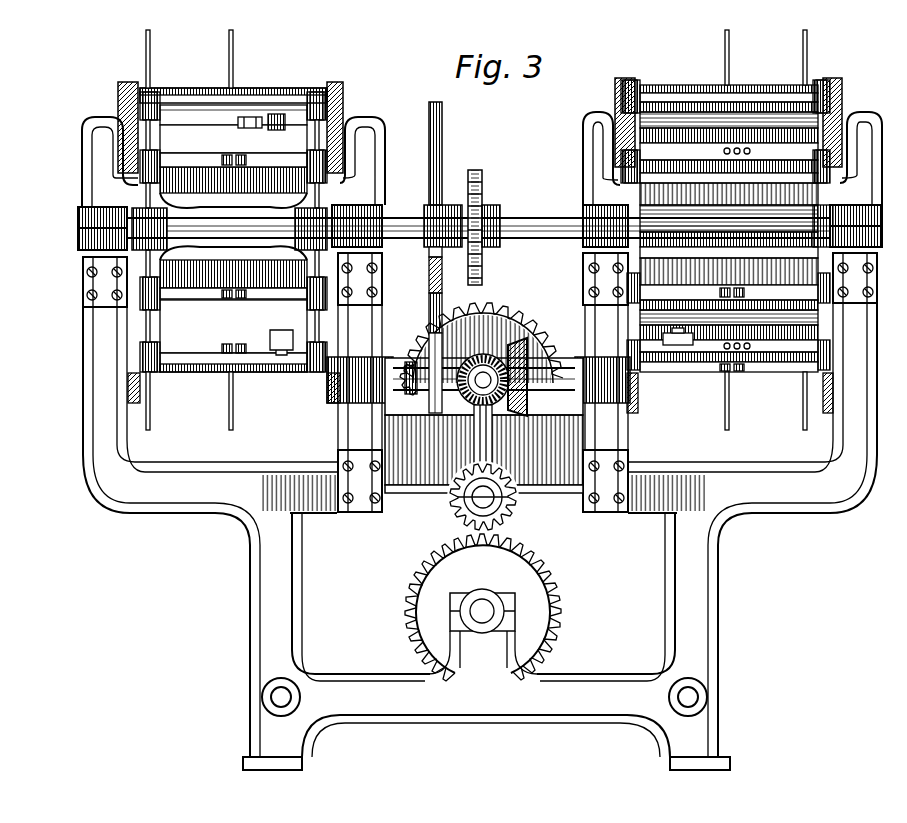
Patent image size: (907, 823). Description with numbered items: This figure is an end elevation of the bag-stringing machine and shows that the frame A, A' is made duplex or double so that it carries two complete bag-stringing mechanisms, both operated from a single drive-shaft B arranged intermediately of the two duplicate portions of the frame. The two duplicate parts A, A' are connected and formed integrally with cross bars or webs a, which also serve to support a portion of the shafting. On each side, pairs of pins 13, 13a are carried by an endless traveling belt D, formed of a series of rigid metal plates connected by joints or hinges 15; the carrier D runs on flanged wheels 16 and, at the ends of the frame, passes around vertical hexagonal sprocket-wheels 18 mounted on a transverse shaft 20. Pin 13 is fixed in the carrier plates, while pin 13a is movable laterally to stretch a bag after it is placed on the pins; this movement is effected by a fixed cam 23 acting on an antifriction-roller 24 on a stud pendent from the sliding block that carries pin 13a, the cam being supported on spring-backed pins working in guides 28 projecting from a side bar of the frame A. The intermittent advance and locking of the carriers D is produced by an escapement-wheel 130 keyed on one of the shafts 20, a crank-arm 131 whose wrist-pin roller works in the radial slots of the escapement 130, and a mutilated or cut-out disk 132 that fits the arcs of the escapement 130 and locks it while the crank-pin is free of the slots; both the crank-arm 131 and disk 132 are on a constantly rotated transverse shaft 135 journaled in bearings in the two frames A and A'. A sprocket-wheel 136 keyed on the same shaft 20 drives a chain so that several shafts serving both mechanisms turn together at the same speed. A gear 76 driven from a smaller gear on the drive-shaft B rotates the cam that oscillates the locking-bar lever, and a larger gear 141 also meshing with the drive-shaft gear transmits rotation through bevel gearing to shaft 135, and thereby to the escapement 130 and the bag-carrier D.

The fixed pin 13 is at (467, 230).
The movable pin 13a is at (466, 230).
The joints or hinges 15 is at (176, 84).
The flanged wheels 16 is at (120, 95).
The sprocket-wheels 18 is at (150, 194).
The shaft 20 is at (478, 215).
The fixed cam 23 is at (258, 128).
The antifriction-roller 24 is at (285, 130).
The guides 28 is at (233, 229).
The gear 76 is at (560, 600).
The escapement-wheel 130 is at (442, 170).
The crank-arm 131 is at (420, 340).
The mutilated or cut-out disk 132 is at (479, 363).
The transverse shaft 135 is at (545, 368).
The sprocket-wheel 136 is at (482, 262).
The larger gear 141 is at (525, 318).
The frame A is at (267, 443).
The frame A' is at (692, 441).
The drive-shaft B is at (448, 504).
The endless traveling belt D is at (479, 225).
The cross bars or webs a is at (483, 579).